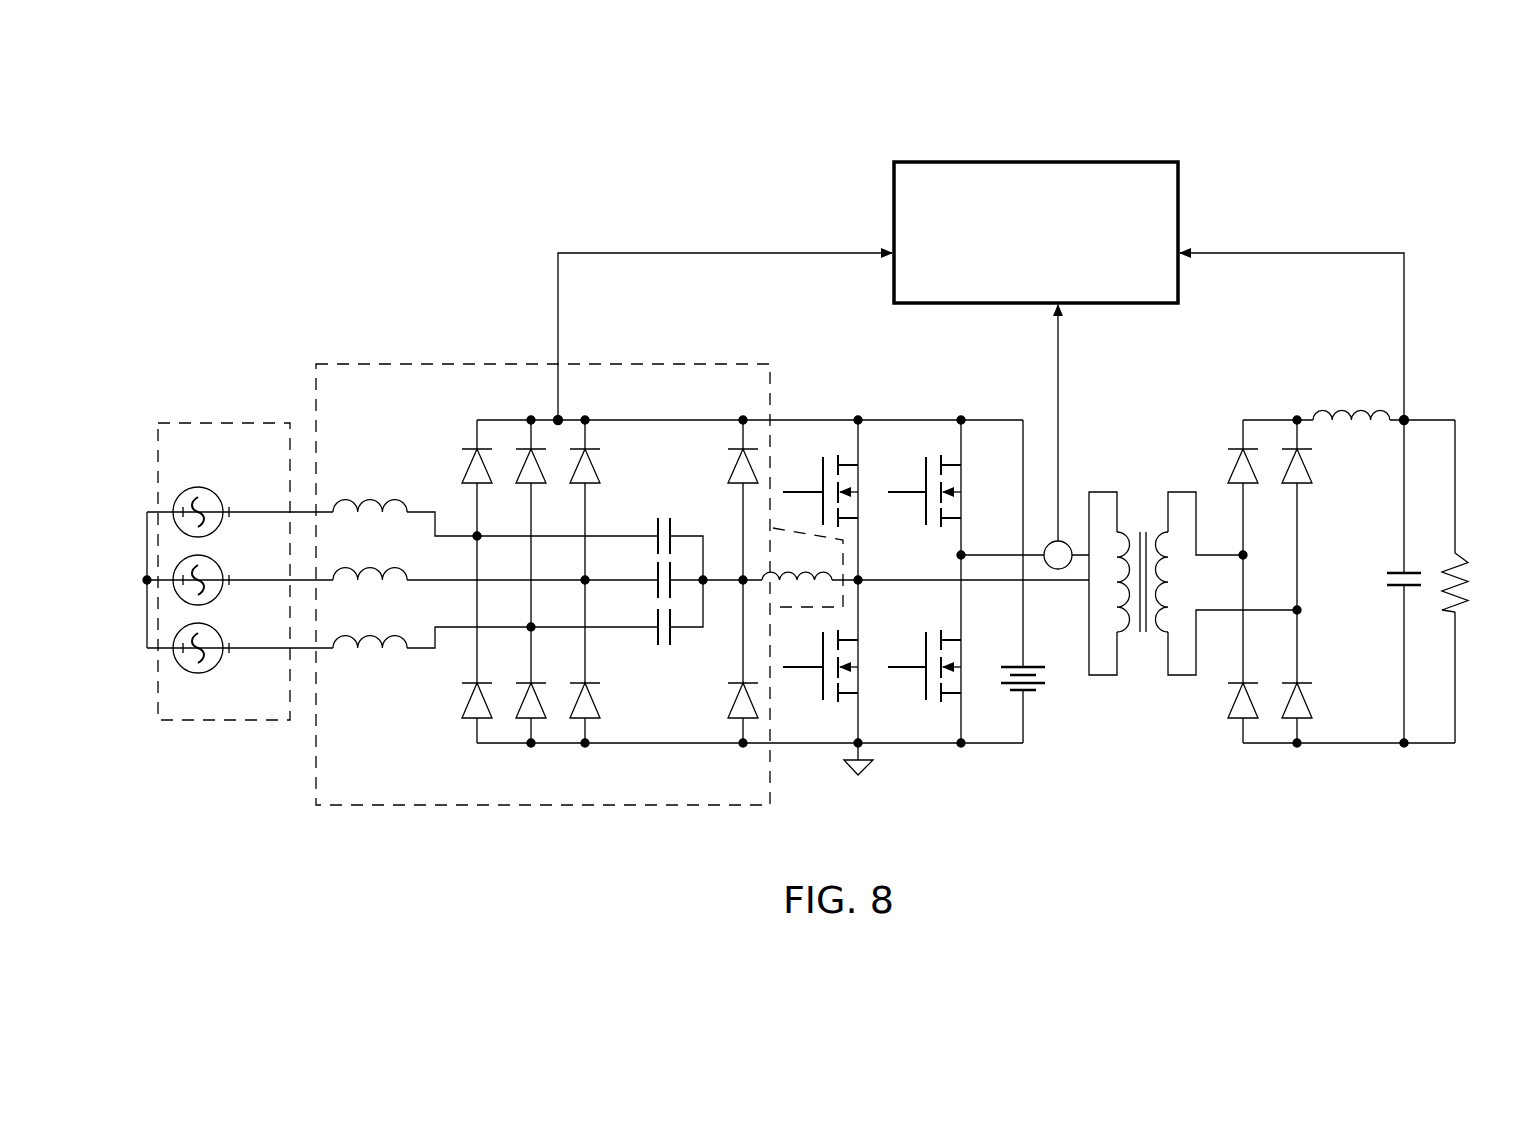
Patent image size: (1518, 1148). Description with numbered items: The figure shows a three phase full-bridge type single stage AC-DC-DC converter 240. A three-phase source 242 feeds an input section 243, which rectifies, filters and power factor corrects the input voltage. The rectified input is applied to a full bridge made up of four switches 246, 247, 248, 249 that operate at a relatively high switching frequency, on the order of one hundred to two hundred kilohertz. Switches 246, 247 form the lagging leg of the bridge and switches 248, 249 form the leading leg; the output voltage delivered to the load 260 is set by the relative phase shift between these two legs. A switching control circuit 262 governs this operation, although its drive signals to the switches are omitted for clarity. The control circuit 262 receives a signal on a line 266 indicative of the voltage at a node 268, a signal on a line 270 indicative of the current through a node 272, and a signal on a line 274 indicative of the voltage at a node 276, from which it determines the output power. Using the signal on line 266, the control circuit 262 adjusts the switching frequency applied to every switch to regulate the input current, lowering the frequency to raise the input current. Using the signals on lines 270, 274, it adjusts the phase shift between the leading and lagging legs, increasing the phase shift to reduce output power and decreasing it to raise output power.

The three phase full-bridge type single stage AC-DC-DC converter 240 is at (1278, 186).
The source 242 is at (195, 422).
The input section 243 is at (357, 361).
The switch 246 is at (848, 487).
The switch 247 is at (848, 662).
The switch 248 is at (951, 487).
The switch 249 is at (951, 662).
The load 260 is at (1458, 553).
The switching control circuit 262 is at (1112, 162).
The line 266 is at (558, 303).
The node 268 is at (562, 417).
The line 270 is at (1058, 356).
The node 272 is at (1061, 546).
The line 274 is at (1404, 312).
The node 276 is at (1407, 419).